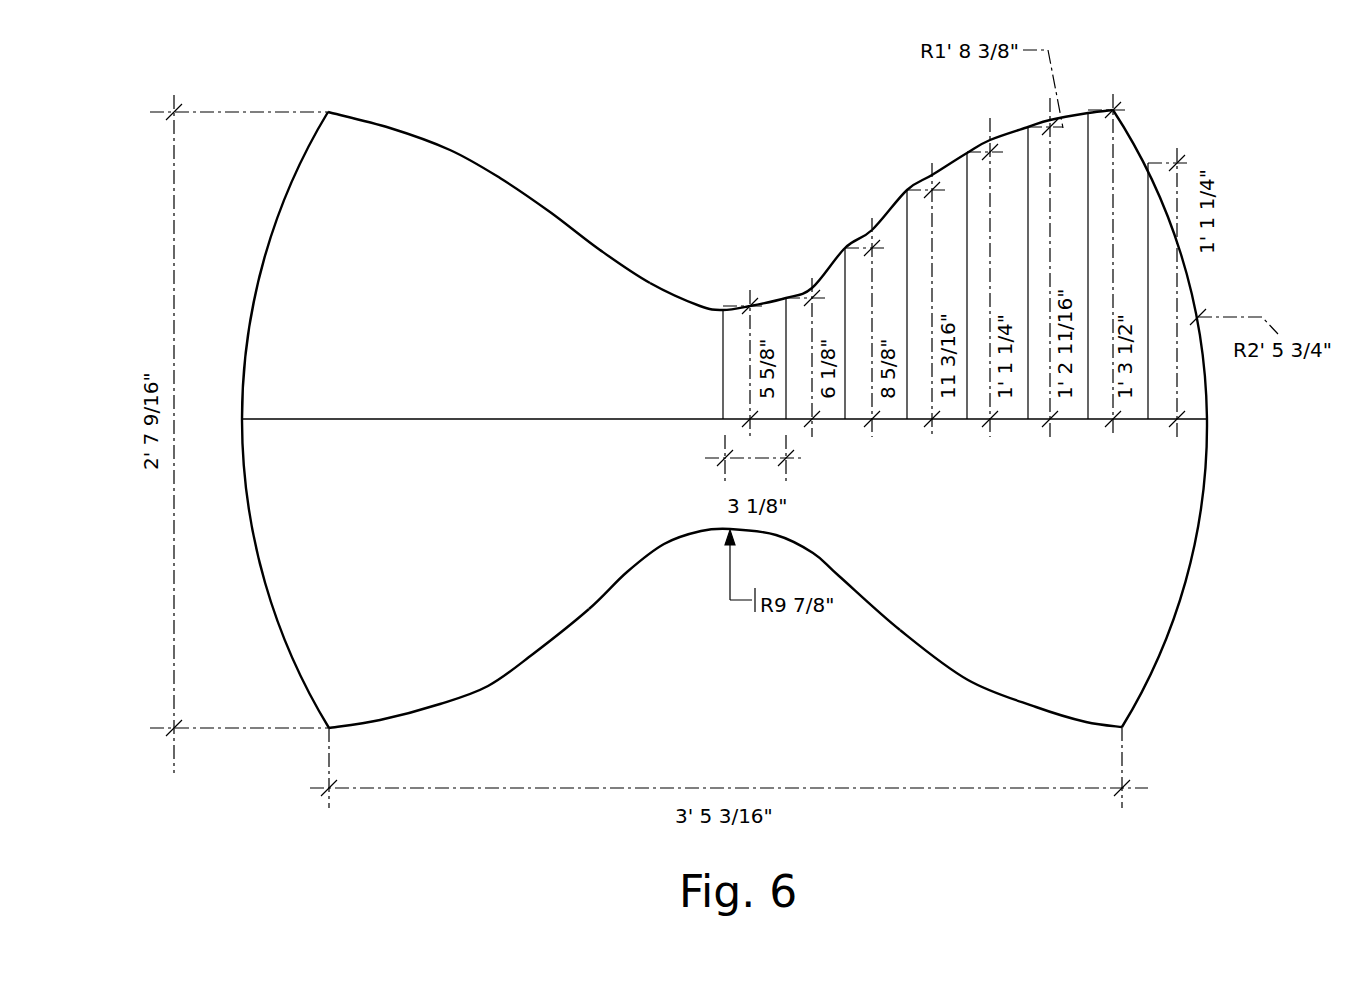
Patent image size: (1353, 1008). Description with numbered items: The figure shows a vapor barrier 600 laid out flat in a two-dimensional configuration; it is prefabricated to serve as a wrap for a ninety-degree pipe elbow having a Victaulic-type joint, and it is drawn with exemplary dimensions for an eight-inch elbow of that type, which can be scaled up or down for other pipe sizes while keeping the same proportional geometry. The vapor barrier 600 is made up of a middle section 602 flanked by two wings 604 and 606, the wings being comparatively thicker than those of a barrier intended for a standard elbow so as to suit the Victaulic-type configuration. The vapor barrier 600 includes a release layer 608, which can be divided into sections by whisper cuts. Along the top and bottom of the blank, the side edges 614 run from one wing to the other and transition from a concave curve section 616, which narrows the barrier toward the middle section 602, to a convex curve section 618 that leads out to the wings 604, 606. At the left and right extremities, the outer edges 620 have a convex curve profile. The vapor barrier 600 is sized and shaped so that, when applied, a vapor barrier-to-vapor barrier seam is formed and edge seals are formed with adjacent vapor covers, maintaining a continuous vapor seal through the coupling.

The vapor barrier 600 is at (730, 76).
The middle section 602 is at (697, 307).
The wing 604 is at (1200, 533).
The wing 606 is at (278, 630).
The release layer 608 is at (504, 502).
The side edges 614 is at (575, 228).
The concave curve section 616 is at (698, 531).
The convex curve section 618 is at (488, 686).
The outer edges 620 is at (265, 247).